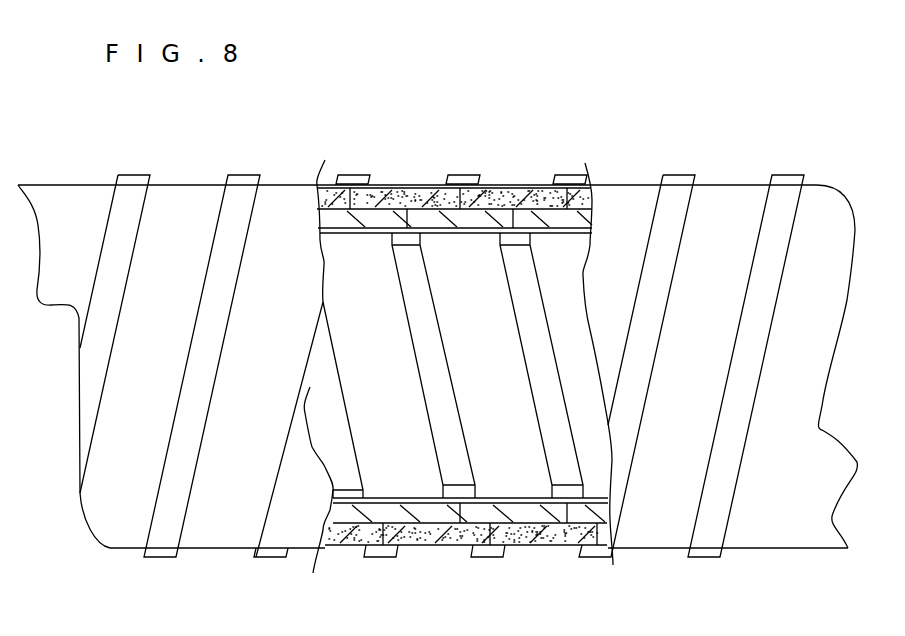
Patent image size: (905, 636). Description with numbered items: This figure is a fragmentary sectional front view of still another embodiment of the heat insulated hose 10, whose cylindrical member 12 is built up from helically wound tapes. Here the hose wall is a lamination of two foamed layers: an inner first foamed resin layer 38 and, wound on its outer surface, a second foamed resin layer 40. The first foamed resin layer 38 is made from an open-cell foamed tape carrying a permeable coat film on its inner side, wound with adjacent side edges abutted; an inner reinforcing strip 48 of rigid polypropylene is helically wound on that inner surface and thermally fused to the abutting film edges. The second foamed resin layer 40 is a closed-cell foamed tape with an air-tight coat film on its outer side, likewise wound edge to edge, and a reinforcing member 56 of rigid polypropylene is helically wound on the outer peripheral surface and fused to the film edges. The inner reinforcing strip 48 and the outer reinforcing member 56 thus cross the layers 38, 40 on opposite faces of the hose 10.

The heat insulated hose 10 is at (250, 115).
The cylindrical member 12 is at (834, 160).
The first foamed resin layer 38 is at (378, 240).
The second foamed resin layer 40 is at (491, 181).
The inner reinforcing strip 48 is at (440, 388).
The reinforcing member 56 is at (467, 174).